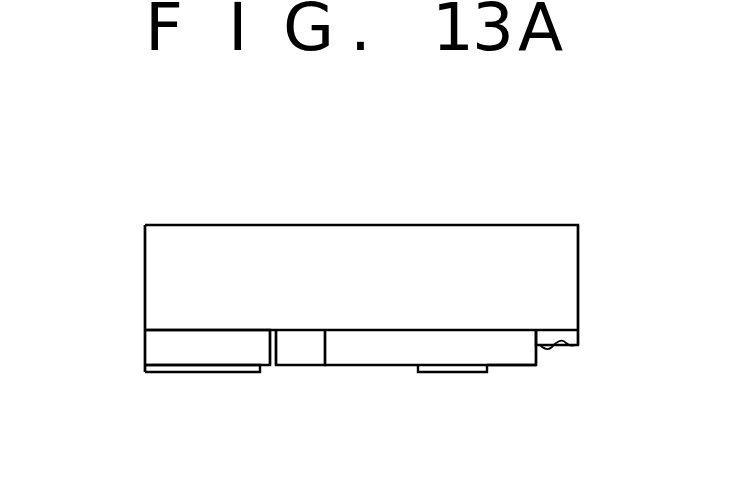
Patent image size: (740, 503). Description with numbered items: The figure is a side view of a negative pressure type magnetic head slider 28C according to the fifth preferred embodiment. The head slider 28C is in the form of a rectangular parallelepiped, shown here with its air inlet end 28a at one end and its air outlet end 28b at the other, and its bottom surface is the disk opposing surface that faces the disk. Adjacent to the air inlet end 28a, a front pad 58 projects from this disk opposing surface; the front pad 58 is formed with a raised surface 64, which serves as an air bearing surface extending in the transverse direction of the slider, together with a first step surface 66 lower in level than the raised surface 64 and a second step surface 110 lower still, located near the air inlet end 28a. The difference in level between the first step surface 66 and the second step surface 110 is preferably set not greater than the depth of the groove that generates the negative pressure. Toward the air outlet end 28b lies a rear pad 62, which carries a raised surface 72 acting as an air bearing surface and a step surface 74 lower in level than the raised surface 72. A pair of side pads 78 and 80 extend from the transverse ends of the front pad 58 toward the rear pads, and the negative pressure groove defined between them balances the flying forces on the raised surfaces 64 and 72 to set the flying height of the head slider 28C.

The negative pressure type magnetic head slider 28C is at (474, 224).
The air inlet end 28a is at (578, 262).
The air outlet end 28b is at (145, 285).
The rear pad 62 is at (145, 352).
The raised surface 72 is at (190, 372).
The step surface 74 is at (270, 367).
The side pad 78 is at (303, 370).
The side pad 80 is at (375, 367).
The raised surface 64 is at (450, 372).
The first step surface 66 is at (502, 367).
The front pad 58 is at (536, 358).
The second step surface 110 is at (578, 343).